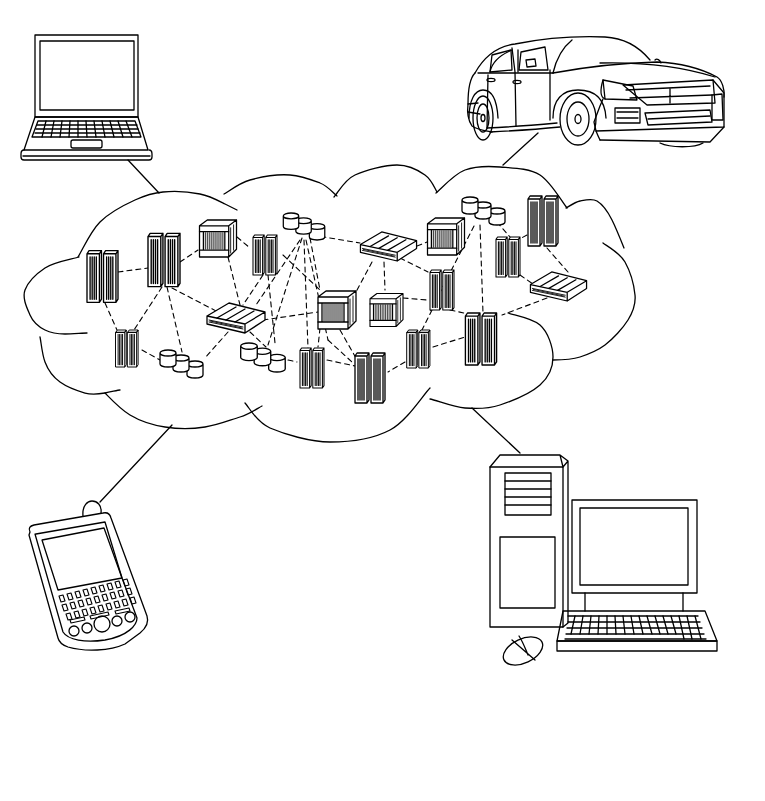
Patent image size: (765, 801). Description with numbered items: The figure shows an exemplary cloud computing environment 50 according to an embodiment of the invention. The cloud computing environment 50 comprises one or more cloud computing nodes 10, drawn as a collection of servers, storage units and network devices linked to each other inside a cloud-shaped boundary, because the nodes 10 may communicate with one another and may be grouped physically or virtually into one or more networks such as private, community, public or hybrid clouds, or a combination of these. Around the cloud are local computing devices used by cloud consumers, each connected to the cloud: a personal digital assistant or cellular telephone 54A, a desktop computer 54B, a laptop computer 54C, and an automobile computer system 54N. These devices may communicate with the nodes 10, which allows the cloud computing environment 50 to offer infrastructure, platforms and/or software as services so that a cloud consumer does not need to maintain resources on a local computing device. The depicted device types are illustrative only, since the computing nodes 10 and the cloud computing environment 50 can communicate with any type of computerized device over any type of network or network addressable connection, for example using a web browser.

The cloud computing nodes 10 is at (588, 307).
The cloud computing environment 50 is at (633, 292).
The personal digital assistant or cellular telephone 54A is at (133, 567).
The desktop computer 54B is at (633, 500).
The laptop computer 54C is at (138, 80).
The automobile computer system 54N is at (468, 95).